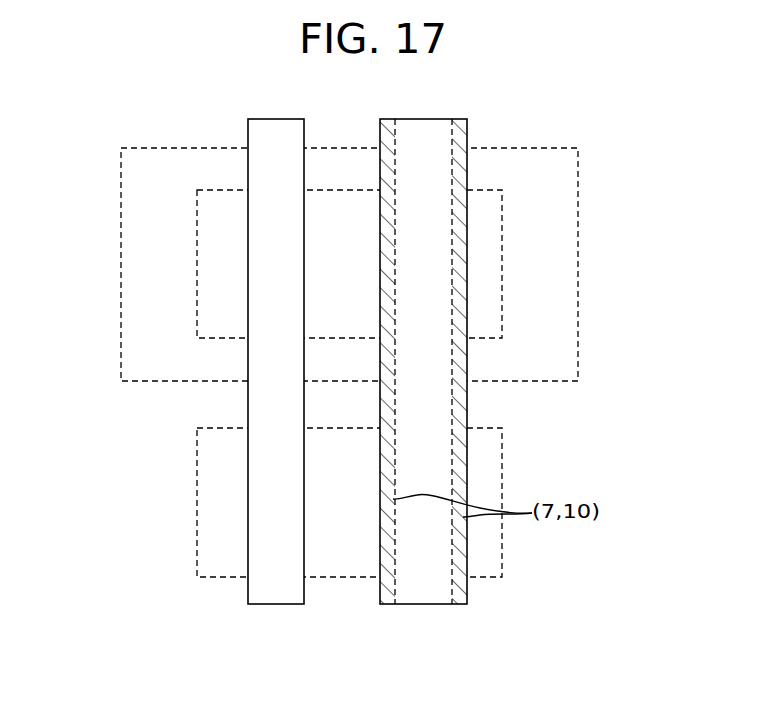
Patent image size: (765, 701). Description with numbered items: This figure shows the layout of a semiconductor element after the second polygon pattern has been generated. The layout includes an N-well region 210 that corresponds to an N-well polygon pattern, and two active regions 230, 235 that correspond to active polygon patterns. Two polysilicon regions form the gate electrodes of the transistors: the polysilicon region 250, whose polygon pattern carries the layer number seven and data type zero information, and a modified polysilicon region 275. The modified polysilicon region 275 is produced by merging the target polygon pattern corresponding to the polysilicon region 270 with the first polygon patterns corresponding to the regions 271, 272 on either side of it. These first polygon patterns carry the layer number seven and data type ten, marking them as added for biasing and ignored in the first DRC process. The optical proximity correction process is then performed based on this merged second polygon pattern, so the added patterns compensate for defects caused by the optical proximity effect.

The N-well region 210 is at (121, 338).
The active region 230 is at (197, 262).
The active region 235 is at (197, 498).
The polysilicon region 250 is at (248, 129).
The modified polysilicon region 275 is at (421, 363).
The region 271 is at (395, 613).
The polysilicon region 270 is at (452, 613).
The region 272 is at (467, 613).